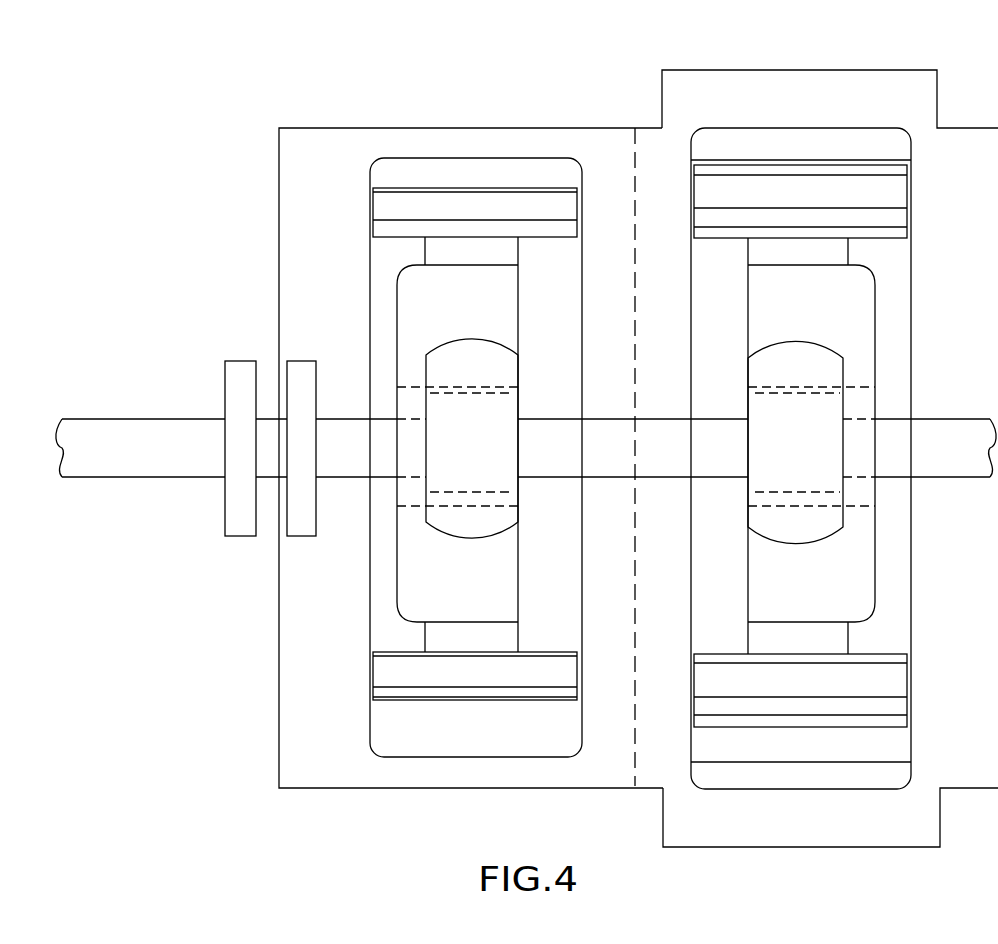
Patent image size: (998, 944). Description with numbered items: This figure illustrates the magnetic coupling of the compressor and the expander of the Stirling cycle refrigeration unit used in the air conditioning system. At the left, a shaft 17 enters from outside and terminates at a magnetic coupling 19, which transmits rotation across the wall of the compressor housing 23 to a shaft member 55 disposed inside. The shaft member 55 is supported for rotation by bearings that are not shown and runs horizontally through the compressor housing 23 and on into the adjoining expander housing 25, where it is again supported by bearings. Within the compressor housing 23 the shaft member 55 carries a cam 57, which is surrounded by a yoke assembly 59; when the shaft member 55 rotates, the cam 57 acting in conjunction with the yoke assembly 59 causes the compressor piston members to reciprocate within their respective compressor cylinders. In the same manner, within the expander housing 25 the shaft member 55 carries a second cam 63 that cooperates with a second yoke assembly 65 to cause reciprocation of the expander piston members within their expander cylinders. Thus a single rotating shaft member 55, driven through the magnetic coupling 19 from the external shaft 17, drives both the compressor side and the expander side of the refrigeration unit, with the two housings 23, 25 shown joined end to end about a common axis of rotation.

The shaft 17 is at (70, 418).
The magnetic coupling 19 is at (260, 355).
The shaft member 55 is at (352, 480).
The compressor housing 23 is at (472, 126).
The expander housing 25 is at (770, 68).
The yoke assembly 59 is at (397, 272).
The cam 57 is at (437, 395).
The yoke assembly 65 is at (874, 282).
The second cam 63 is at (757, 395).